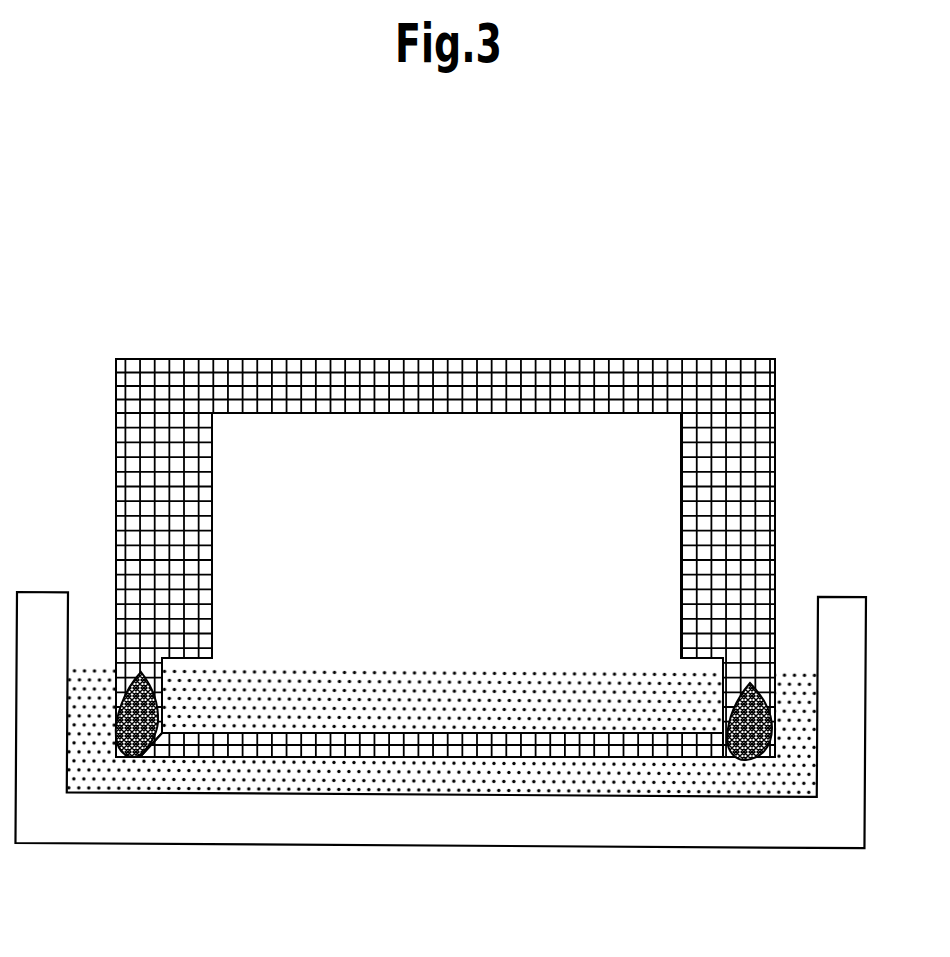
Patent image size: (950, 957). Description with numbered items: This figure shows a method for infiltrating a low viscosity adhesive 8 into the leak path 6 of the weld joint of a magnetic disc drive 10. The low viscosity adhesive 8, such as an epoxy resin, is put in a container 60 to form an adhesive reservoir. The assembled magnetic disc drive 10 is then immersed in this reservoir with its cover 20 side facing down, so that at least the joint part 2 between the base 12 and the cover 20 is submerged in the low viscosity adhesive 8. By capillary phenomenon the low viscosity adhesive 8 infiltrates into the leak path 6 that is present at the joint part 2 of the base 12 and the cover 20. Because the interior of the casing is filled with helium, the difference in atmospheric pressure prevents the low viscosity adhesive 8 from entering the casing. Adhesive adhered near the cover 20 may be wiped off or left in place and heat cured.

The joint part 2 is at (150, 700).
The leak path 6 is at (155, 745).
The low viscosity adhesive 8 is at (790, 740).
The magnetic disc drive 10 is at (427, 360).
The base 12 is at (630, 390).
The cover 20 is at (320, 733).
The container 60 is at (735, 815).